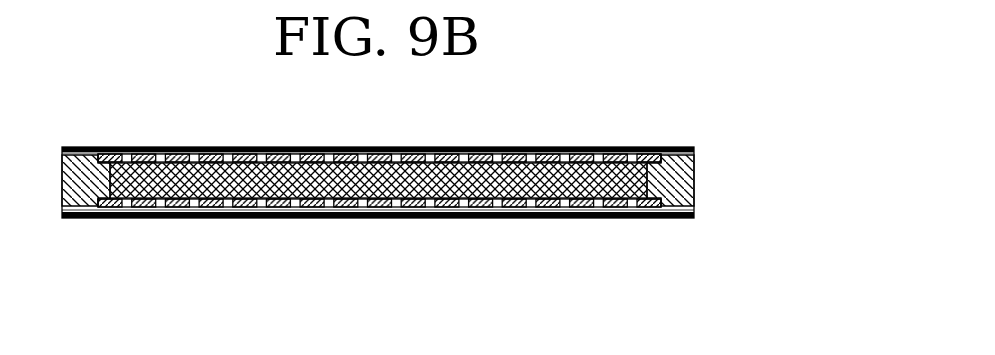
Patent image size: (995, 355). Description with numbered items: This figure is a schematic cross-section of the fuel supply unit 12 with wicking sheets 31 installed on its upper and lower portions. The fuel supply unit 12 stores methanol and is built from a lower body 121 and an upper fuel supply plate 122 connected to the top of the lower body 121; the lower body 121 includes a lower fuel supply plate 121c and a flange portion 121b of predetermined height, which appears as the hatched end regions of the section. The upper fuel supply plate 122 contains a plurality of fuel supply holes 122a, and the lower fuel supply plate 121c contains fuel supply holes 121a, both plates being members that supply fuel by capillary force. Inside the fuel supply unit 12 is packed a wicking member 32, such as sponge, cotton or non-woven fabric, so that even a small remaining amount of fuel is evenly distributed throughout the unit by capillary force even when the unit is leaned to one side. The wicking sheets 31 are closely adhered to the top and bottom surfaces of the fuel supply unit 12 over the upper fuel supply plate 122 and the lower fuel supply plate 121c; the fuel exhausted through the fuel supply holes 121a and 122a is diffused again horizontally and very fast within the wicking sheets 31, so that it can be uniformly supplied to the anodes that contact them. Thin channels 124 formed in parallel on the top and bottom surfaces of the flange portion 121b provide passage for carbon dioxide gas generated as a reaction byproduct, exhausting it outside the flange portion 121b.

The fuel supply unit 12 is at (704, 126).
The lower body 121 is at (697, 212).
The fuel supply holes 121a is at (410, 207).
The flange portion 121b is at (692, 173).
The lower fuel supply plate 121c is at (322, 218).
The upper fuel supply plate 122 is at (362, 159).
The fuel supply holes 122a is at (277, 158).
The channels 124 is at (80, 149).
The wicking sheets 31 is at (441, 160).
The wicking member 32 is at (508, 162).